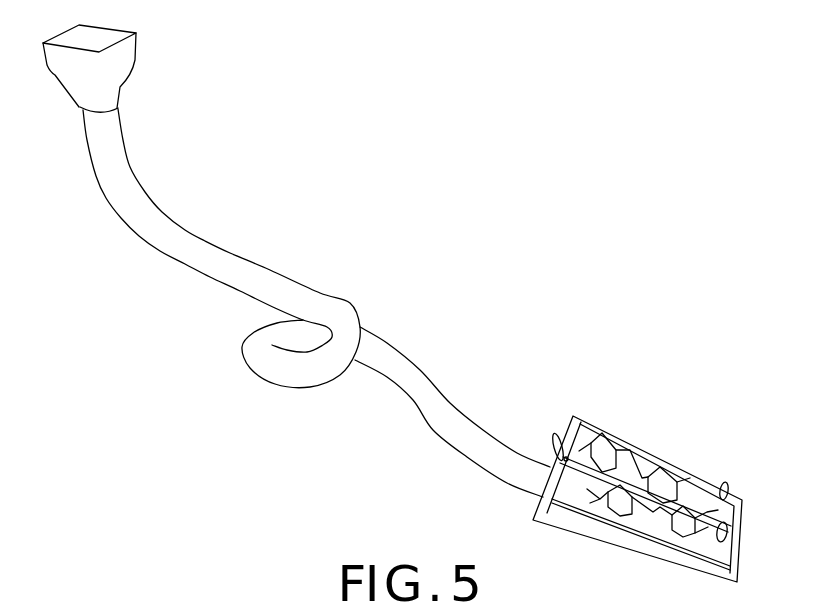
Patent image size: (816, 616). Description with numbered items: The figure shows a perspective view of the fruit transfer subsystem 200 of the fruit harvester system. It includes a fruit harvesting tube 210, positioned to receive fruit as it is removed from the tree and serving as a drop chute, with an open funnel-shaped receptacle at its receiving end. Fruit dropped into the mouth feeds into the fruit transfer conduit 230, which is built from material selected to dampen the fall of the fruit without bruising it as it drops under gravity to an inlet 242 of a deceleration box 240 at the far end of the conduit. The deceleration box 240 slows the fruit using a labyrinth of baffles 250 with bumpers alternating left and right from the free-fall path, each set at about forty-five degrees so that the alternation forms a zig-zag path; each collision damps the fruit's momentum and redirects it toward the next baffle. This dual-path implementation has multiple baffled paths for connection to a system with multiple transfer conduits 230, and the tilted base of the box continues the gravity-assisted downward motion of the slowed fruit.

The fluid delivery system 200 is at (451, 215).
The fruit harvesting tube 210 is at (192, 193).
The fruit transfer conduit 230 is at (222, 243).
The deceleration box 240 is at (597, 425).
The inlet 242 is at (543, 494).
The baffles 250 is at (697, 495).